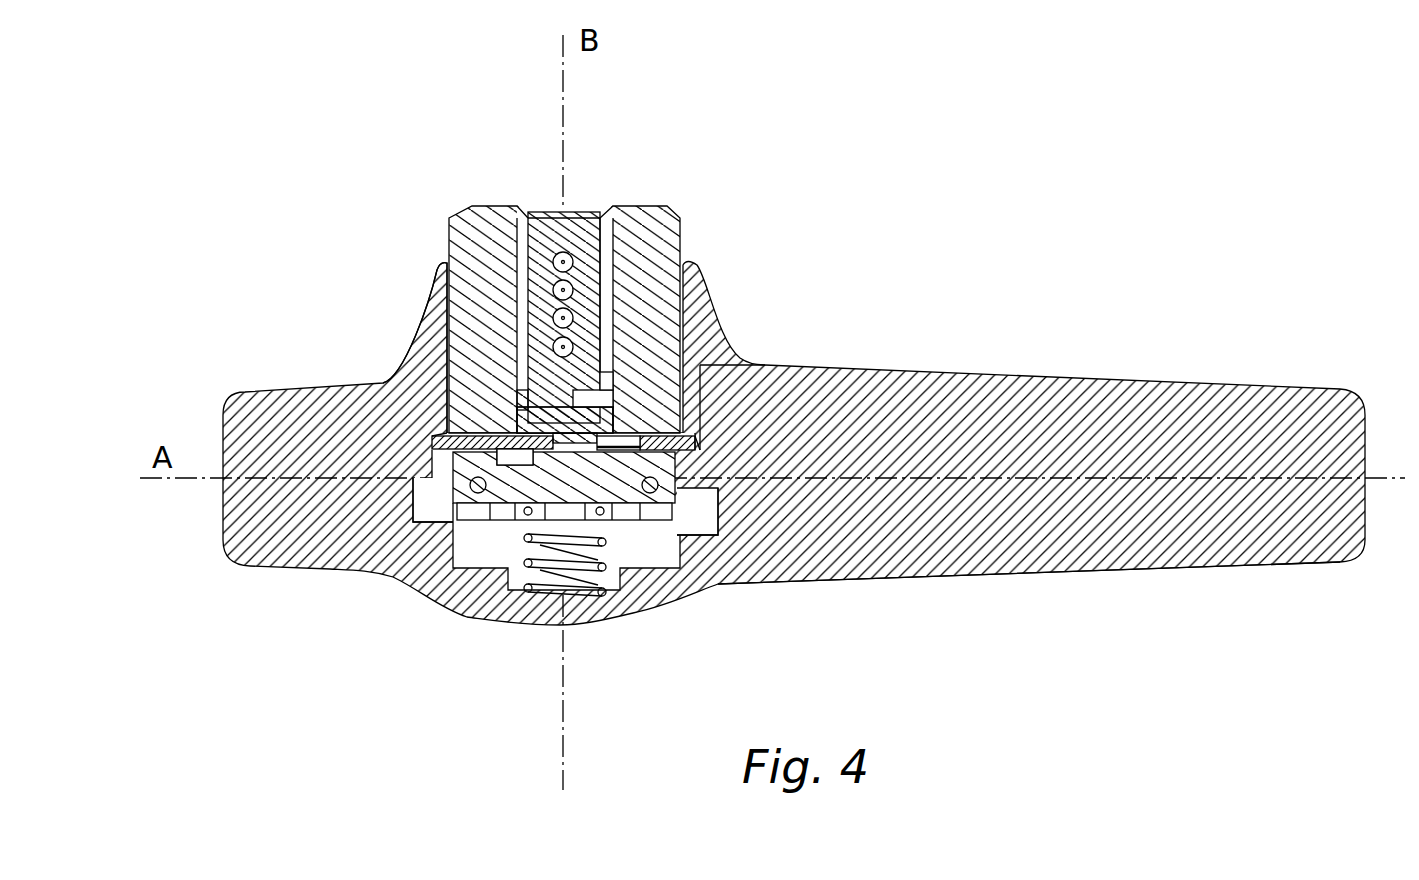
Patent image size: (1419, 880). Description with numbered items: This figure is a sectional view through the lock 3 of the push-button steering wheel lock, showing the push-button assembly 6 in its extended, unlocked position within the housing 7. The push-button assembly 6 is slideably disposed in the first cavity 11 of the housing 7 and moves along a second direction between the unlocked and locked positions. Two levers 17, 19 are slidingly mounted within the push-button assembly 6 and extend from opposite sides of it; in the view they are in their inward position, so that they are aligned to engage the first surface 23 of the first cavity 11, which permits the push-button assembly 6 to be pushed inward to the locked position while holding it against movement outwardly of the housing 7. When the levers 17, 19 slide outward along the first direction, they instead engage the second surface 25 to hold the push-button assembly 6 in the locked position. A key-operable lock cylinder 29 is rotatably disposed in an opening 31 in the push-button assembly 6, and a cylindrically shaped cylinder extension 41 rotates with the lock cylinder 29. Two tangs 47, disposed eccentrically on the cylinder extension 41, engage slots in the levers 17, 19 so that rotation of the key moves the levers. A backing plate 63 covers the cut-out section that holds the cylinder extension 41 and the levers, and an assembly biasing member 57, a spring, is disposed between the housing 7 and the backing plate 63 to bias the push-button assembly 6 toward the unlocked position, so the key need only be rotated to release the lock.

The lock 3 is at (950, 360).
The push-button assembly 6 is at (486, 200).
The housing 7 is at (1003, 558).
The first cavity 11 is at (447, 315).
The lever 17 is at (440, 445).
The lever 19 is at (605, 490).
The first surface 23 is at (420, 443).
The second surface 25 is at (432, 480).
The lock cylinder 29 is at (583, 216).
The opening 31 is at (617, 265).
The cylinder extension 41 is at (582, 423).
The tangs 47 is at (548, 445).
The assembly biasing member 57 is at (575, 545).
The backing plate 63 is at (628, 492).